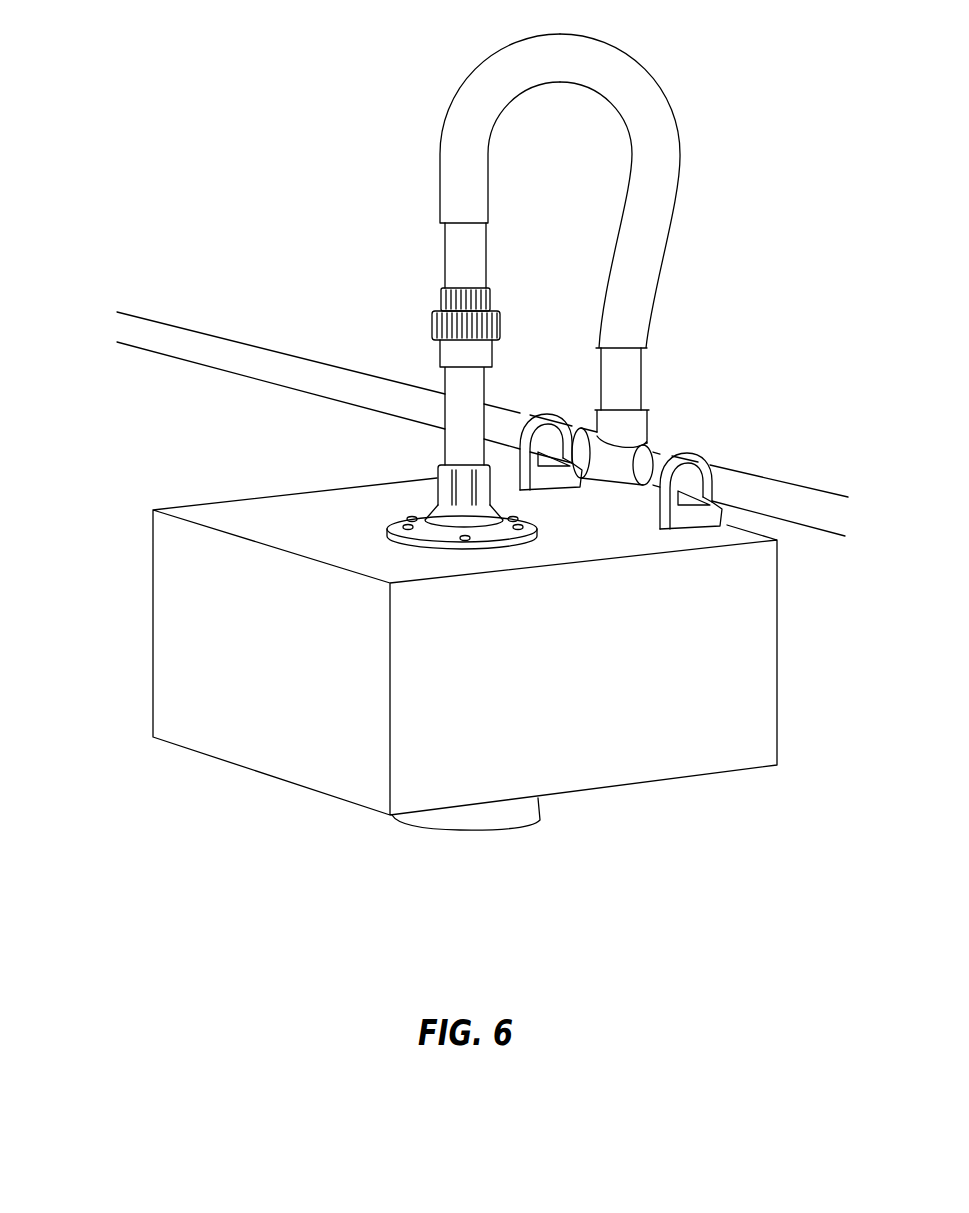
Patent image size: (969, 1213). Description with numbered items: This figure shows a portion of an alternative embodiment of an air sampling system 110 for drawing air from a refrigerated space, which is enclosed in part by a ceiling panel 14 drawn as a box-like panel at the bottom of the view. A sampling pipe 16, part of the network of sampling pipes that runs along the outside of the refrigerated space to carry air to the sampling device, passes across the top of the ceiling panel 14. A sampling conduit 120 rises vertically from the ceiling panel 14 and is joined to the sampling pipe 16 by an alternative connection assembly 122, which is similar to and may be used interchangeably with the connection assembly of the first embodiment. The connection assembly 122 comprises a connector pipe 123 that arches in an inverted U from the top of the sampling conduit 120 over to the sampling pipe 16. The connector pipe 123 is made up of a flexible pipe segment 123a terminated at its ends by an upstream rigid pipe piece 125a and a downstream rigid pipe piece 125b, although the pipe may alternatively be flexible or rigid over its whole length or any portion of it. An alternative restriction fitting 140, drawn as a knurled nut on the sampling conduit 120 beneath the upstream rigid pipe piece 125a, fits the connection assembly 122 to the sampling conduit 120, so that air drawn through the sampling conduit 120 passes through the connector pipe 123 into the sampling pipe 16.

The ceiling panel 14 is at (150, 627).
The sampling pipes 16 is at (753, 472).
The air sampling system 110 is at (290, 150).
The sampling conduit 120 is at (432, 440).
The connection assembly 122 is at (567, 191).
The connector pipe 123 is at (676, 246).
The flexible pipe segment 123a is at (462, 85).
The upstream rigid pipe piece 125a is at (475, 262).
The downstream rigid pipe piece 125b is at (630, 377).
The restriction fitting 140 is at (424, 322).